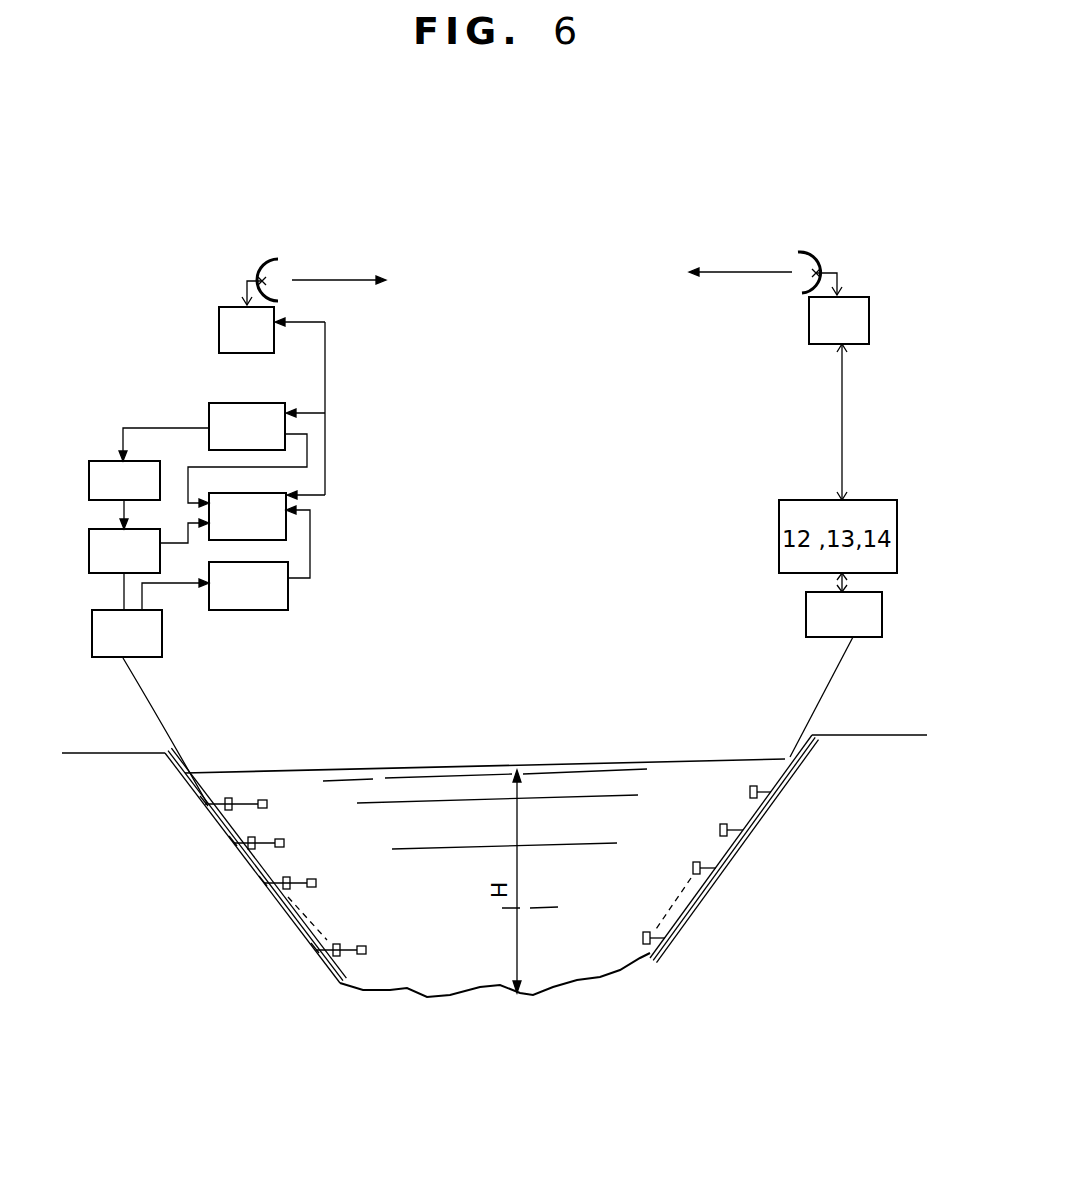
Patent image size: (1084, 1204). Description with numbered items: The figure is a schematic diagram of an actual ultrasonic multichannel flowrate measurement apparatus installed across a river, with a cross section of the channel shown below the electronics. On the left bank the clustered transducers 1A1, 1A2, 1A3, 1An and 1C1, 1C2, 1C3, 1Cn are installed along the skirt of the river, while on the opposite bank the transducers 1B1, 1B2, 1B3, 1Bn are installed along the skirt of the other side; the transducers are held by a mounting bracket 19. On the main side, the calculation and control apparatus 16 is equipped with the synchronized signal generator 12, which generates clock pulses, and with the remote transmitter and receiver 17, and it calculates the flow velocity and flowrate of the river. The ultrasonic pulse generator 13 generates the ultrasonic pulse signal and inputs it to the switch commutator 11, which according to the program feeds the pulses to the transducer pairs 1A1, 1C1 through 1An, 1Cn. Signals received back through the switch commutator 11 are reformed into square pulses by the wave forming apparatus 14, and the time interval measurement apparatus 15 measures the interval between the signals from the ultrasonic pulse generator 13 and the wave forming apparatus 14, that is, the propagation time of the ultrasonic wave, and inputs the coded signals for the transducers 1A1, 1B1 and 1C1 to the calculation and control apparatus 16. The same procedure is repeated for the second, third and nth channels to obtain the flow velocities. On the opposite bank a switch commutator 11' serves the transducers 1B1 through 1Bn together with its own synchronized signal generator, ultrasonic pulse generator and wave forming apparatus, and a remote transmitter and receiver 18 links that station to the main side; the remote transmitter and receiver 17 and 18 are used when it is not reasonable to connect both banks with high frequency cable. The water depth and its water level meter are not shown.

The switch commutator 11 is at (127, 633).
The switch commutator 11' is at (844, 614).
The synchronized signal generator 12 is at (124, 480).
The ultrasonic pulse generator 13 is at (124, 551).
The wave forming apparatus 14 is at (248, 586).
The time interval measurement apparatus 15 is at (247, 516).
The calculation and control apparatus 16 is at (247, 426).
The remote transmitter and receiver 17 is at (302, 306).
The remote transmitter and receiver 18 is at (779, 298).
The mounting bracket 19 is at (165, 756).
The transducer 1A1 is at (173, 807).
The transducer 1A2 is at (198, 848).
The transducer 1A3 is at (225, 888).
The transducer 1An is at (279, 954).
The transducer 1B1 is at (785, 792).
The transducer 1B2 is at (757, 834).
The transducer 1B3 is at (736, 872).
The transducer 1Bn is at (692, 939).
The transducer 1C1 is at (255, 804).
The transducer 1C2 is at (284, 844).
The transducer 1C3 is at (314, 883).
The transducer 1Cn is at (362, 950).